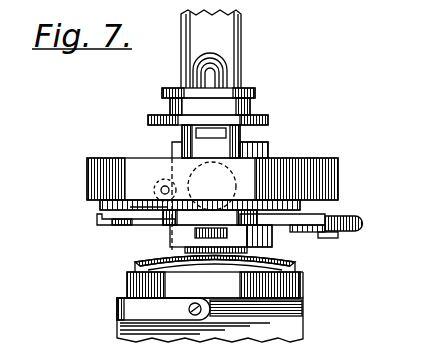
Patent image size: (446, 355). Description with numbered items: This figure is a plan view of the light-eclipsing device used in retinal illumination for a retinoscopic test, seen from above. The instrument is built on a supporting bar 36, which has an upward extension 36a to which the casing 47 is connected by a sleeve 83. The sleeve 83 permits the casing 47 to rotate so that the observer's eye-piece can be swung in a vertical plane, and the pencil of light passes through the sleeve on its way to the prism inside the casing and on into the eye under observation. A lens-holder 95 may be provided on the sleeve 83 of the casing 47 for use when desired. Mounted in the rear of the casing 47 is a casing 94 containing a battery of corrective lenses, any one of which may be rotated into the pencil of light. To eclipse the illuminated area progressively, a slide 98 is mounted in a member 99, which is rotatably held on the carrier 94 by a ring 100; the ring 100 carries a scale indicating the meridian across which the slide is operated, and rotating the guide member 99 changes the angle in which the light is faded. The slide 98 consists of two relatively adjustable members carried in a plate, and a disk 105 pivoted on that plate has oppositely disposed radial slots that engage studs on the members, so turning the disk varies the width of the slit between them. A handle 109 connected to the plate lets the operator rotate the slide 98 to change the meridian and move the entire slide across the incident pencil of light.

The supporting bar 36 is at (241, 47).
The upward extension 36a is at (304, 288).
The casing 47 is at (297, 316).
The sleeve 83 is at (130, 273).
The casing 94 is at (114, 162).
The lens-holder 95 is at (140, 262).
The slide 98 is at (127, 223).
The member 99 is at (167, 226).
The ring 100 is at (130, 207).
The disk 105 is at (360, 226).
The handle 109 is at (97, 221).